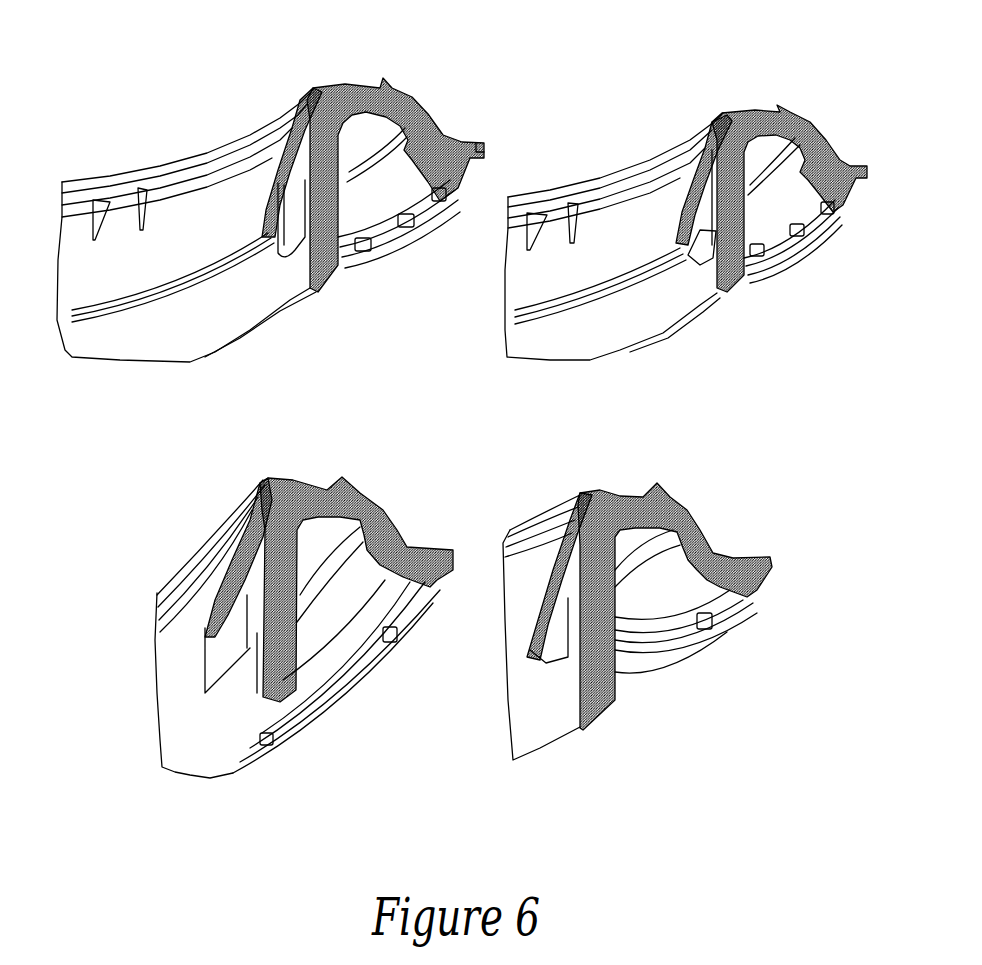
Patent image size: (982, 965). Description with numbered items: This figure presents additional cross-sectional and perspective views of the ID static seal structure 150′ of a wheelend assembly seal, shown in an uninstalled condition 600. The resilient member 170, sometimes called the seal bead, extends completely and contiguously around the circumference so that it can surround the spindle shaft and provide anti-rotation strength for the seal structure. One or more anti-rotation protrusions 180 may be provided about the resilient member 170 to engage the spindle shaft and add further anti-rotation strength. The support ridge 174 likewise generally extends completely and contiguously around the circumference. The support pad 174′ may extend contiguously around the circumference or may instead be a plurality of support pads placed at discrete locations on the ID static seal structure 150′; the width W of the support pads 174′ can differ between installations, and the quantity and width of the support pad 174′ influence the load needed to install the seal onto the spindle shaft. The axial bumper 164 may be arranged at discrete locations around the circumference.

The ID static seal structure 150′ is at (170, 75).
The resilient member 170 is at (147, 280).
The support ridge 174 is at (267, 247).
The support pad 174′ is at (343, 83).
The axial bumper 164 is at (417, 230).
The anti-rotation protrusion 180 is at (540, 208).
The width of the support pads W is at (293, 243).
The uninstalled condition 600 is at (490, 446).